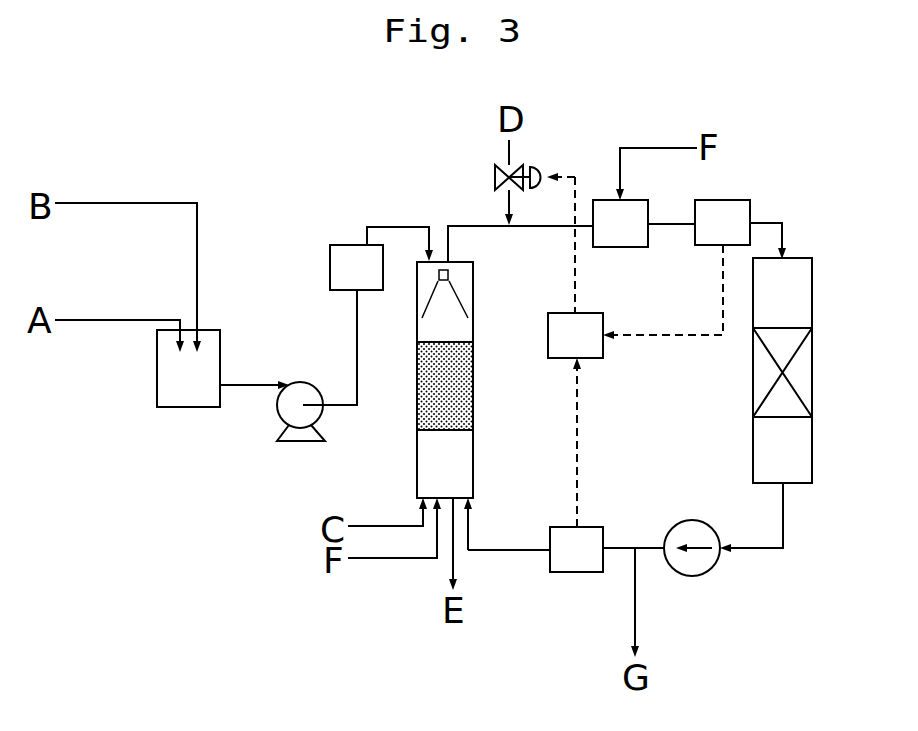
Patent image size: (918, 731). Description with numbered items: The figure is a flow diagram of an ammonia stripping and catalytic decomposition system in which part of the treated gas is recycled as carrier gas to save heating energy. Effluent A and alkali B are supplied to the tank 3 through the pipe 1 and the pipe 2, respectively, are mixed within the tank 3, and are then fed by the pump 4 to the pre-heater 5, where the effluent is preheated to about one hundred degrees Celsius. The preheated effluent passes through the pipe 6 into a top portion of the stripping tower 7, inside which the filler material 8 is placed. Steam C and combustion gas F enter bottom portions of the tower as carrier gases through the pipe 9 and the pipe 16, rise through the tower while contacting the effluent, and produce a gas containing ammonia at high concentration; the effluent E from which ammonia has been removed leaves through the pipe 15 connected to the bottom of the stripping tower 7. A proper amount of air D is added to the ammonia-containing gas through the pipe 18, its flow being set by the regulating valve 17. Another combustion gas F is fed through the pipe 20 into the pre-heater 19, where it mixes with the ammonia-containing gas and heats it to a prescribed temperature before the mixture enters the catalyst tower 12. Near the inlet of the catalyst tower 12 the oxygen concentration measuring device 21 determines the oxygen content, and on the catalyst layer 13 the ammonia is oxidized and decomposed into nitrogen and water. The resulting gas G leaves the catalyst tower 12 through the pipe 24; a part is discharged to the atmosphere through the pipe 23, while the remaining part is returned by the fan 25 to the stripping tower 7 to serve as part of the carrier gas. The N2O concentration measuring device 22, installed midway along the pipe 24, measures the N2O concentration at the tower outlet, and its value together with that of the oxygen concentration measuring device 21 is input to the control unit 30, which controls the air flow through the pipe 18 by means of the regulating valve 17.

The pipe 1 is at (86, 320).
The pipe 2 is at (113, 203).
The tank 3 is at (183, 407).
The pump 4 is at (293, 442).
The pre-heater 5 is at (330, 272).
The pipe 6 is at (390, 227).
The stripping tower 7 is at (473, 292).
The filler material 8 is at (473, 404).
The pipe 9 is at (385, 526).
The catalyst tower 12 is at (797, 297).
The catalyst layer 13 is at (788, 388).
The pipe 15 is at (458, 567).
The pipe 16 is at (378, 560).
The regulating valve 17 is at (532, 166).
The pipe 18 is at (508, 153).
The pre-heater 19 is at (612, 250).
The pipe 20 is at (640, 148).
The oxygen concentration measuring device 21 is at (740, 200).
The N2O concentration measuring device 22 is at (557, 527).
The pipe 23 is at (637, 617).
The pipe 24 is at (768, 530).
The fan 25 is at (689, 521).
The control unit 30 is at (587, 360).